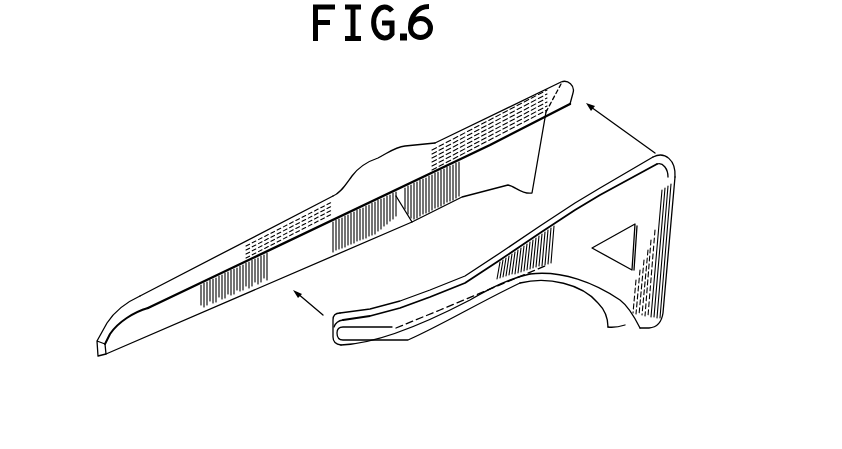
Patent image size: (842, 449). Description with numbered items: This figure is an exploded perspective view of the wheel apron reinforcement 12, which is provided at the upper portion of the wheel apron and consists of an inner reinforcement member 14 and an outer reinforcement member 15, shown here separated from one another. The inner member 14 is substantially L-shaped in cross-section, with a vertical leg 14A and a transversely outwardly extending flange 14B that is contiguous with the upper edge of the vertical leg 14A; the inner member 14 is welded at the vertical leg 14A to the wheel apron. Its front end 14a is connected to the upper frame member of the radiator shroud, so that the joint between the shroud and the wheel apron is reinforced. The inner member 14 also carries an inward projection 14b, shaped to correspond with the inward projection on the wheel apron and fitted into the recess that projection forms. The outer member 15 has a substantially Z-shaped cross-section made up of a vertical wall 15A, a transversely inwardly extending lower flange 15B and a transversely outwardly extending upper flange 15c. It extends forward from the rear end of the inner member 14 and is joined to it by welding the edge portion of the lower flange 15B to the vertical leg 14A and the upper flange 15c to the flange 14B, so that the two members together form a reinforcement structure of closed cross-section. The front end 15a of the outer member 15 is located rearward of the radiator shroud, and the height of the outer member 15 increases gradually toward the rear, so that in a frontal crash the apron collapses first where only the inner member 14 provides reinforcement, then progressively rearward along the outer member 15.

The wheel apron reinforcement 12 is at (257, 175).
The inner reinforcement member 14 is at (338, 208).
The front end 14a is at (108, 327).
The vertical leg 14A is at (232, 300).
The inward projection 14b is at (384, 153).
The transversely outwardly extending flange 14B is at (493, 120).
The outer reinforcement member 15 is at (541, 288).
The front end 15a is at (360, 334).
The vertical wall 15A is at (662, 223).
The transversely inwardly extending lower flange 15B is at (622, 316).
The transversely outwardly extending upper flange 15c is at (660, 161).